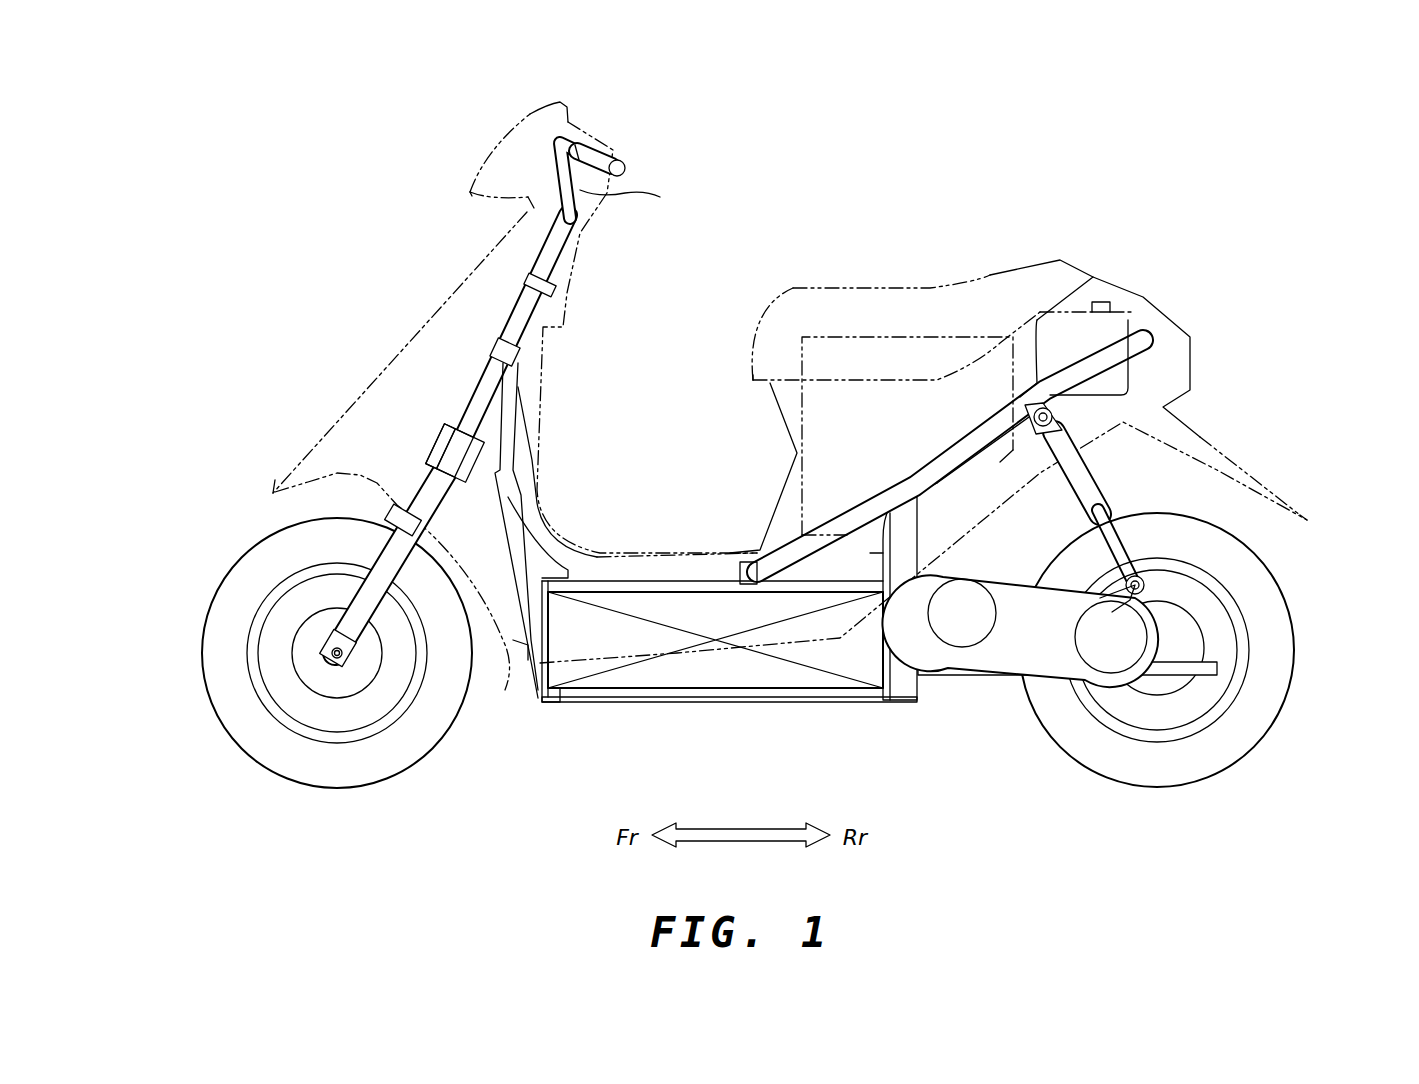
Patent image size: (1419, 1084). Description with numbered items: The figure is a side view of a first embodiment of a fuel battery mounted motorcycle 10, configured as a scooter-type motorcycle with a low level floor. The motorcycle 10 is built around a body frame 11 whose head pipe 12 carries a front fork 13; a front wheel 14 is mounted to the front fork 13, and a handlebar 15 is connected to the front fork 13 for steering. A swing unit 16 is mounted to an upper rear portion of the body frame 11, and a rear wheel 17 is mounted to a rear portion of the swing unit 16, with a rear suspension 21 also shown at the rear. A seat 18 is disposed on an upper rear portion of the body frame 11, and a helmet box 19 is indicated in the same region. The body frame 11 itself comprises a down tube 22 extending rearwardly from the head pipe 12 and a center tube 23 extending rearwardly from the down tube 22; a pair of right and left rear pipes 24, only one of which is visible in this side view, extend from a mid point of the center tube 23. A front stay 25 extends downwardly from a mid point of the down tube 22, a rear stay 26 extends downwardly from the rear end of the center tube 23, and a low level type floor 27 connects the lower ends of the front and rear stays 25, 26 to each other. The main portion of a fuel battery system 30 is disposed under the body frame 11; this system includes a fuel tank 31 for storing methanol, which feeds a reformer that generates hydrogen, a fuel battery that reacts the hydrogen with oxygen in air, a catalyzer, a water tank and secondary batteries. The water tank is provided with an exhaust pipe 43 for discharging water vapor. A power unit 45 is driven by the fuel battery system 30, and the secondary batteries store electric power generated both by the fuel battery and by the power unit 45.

The fuel battery mounted motorcycle 10 is at (348, 152).
The body frame 11 is at (620, 517).
The head pipe 12 is at (483, 363).
The front fork 13 is at (423, 463).
The front wheel 14 is at (272, 535).
The handlebar 15 is at (608, 185).
The swing unit 16 is at (1010, 665).
The rear wheel 17 is at (1280, 592).
The seat 18 is at (887, 285).
The helmet box 19 is at (943, 337).
The rear suspension 21 is at (1100, 485).
The down tube 22 is at (535, 470).
The center tube 23 is at (665, 583).
The rear pipes 24 is at (928, 462).
The front stay 25 is at (515, 683).
The rear stay 26 is at (892, 690).
The low level type floor 27 is at (735, 698).
The fuel battery system 30 is at (622, 738).
The fuel tank 31 is at (1133, 300).
The exhaust pipe 43 is at (1255, 652).
The power unit 45 is at (918, 668).